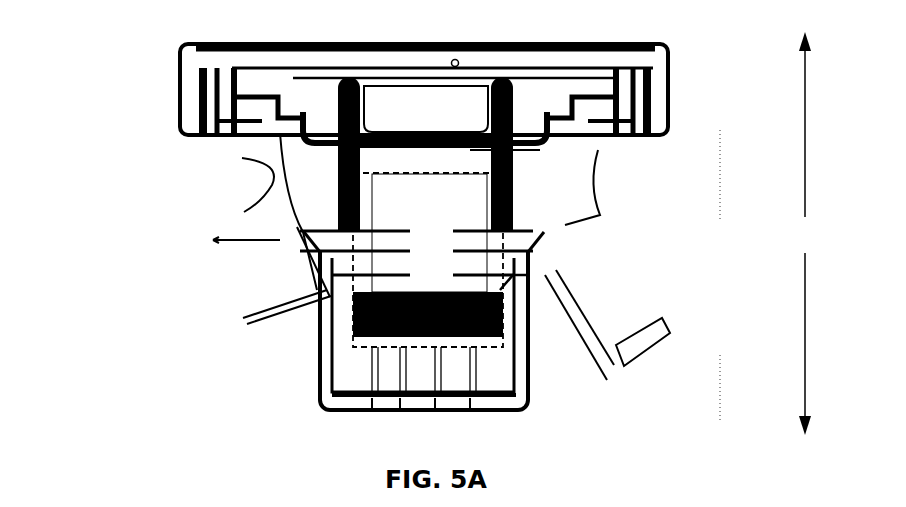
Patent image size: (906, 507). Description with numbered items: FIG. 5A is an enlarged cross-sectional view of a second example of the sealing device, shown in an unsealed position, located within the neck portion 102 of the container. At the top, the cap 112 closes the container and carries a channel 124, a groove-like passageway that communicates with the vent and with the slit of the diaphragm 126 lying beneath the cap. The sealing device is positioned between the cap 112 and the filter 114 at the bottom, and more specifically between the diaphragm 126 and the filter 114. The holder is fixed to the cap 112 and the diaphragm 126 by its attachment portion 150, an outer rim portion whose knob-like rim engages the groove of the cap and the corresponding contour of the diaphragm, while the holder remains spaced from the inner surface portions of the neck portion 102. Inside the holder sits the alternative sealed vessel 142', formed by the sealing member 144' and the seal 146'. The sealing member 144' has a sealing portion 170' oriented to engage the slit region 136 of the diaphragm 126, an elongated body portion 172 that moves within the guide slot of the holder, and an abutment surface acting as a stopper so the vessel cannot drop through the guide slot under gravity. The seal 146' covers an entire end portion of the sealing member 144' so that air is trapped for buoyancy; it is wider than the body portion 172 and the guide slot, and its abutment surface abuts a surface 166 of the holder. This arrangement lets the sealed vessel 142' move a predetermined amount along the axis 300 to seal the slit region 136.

The neck portion 102 is at (176, 86).
The cap 112 is at (605, 63).
The filter 114 is at (478, 404).
The channel 124 is at (455, 59).
The diaphragm 126 is at (300, 140).
The slit region 136 is at (505, 150).
The sealed vessel 142' is at (385, 363).
The sealing member 144' is at (350, 260).
The seal 146' is at (487, 360).
The attachment portion 150 is at (567, 118).
The surface of the holder 166 is at (537, 282).
The sealing portion 170' is at (500, 233).
The elongated body portion 172 is at (343, 282).
The axis 300 is at (800, 233).